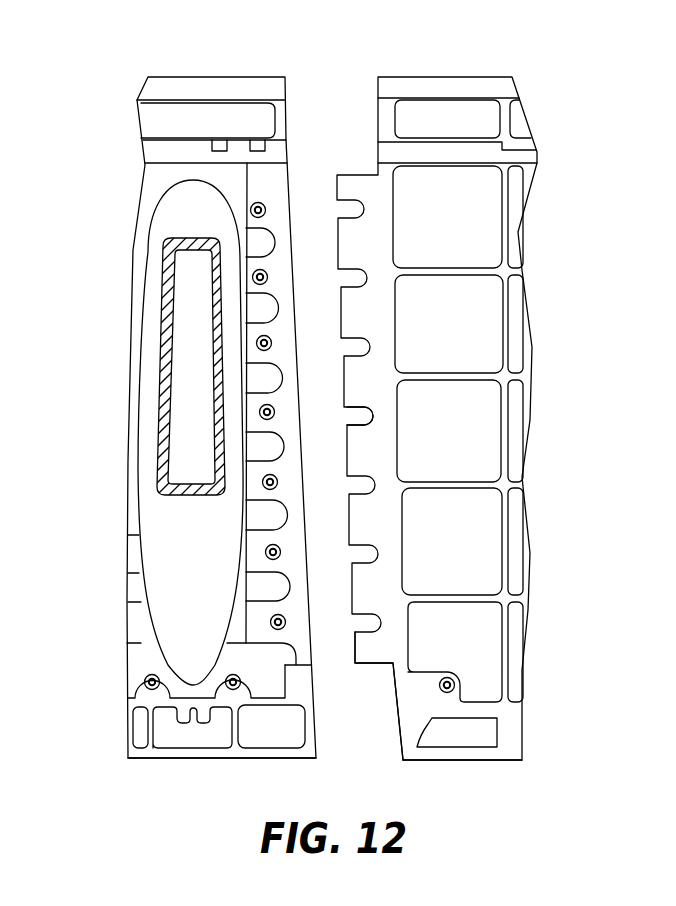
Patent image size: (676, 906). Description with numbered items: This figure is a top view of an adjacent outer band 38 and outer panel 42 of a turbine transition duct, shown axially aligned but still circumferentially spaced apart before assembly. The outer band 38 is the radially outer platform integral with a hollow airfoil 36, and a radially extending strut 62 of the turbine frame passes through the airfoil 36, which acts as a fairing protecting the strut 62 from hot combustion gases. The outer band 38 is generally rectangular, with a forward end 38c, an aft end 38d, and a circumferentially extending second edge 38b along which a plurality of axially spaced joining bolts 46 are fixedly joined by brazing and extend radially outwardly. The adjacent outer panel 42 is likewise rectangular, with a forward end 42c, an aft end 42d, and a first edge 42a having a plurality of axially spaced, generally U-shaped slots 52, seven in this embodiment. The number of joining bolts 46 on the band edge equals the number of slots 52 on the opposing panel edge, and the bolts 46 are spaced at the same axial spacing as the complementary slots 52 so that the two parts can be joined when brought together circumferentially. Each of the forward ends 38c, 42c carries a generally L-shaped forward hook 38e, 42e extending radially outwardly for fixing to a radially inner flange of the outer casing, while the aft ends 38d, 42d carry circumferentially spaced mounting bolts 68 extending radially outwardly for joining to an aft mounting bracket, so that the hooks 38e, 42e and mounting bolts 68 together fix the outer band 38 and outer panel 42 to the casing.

The outer band 38 is at (140, 176).
The forward end of outer band 38c is at (191, 77).
The forward hook 38e is at (279, 150).
The second edge of outer band 38b is at (309, 652).
The aft end of outer band 38d is at (199, 760).
The airfoil 36 is at (137, 319).
The strut 62 is at (178, 399).
The joining bolts 46 is at (272, 344).
The mounting bolts 68 is at (146, 684).
The outer panel 42 is at (533, 316).
The forward end of outer panel 42c is at (477, 77).
The forward hook 42e is at (391, 155).
The first edge of outer panel 42a is at (370, 666).
The aft end of outer panel 42d is at (461, 761).
The slot 52 is at (354, 406).